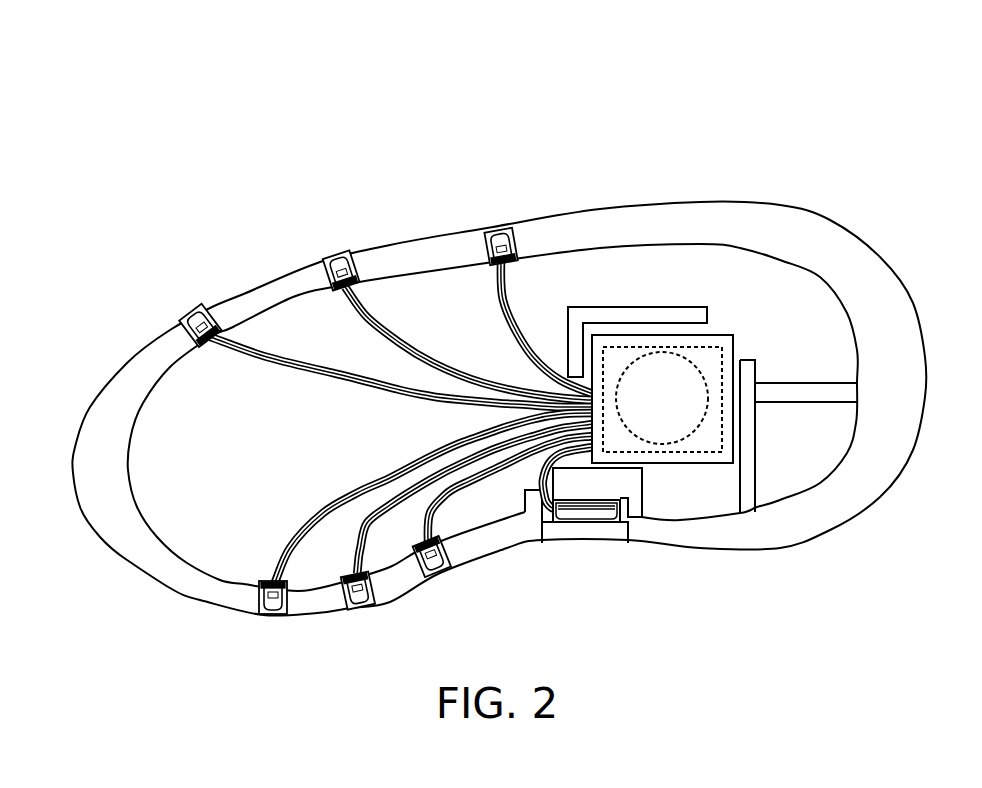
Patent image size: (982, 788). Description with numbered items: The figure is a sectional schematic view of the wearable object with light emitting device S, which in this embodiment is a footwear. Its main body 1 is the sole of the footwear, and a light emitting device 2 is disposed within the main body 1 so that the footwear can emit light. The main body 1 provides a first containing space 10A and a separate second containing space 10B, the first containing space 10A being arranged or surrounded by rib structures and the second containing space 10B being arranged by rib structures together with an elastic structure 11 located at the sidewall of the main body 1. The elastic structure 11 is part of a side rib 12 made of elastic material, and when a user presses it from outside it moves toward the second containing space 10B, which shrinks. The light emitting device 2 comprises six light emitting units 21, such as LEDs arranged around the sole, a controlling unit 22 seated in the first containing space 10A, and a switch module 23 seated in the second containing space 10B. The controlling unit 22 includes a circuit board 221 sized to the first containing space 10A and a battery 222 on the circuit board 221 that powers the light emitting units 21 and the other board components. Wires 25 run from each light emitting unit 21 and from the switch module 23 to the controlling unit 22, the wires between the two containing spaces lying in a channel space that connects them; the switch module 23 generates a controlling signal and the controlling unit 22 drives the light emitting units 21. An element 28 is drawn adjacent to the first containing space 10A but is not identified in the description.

The wearable object with light emitting device S is at (503, 108).
The main body 1 is at (156, 360).
The light emitting device 2 is at (399, 229).
The light emitting units 21 is at (333, 261).
The controlling unit 22 is at (615, 375).
The circuit board 221 is at (727, 345).
The battery 222 is at (697, 403).
The switch module 23 is at (628, 500).
The wires 25 is at (330, 502).
The retaining bracket 28 is at (683, 334).
The first containing space 10A is at (639, 332).
The second containing space 10B is at (627, 516).
The elastic structure 11 is at (588, 525).
The side rib 12 is at (512, 530).